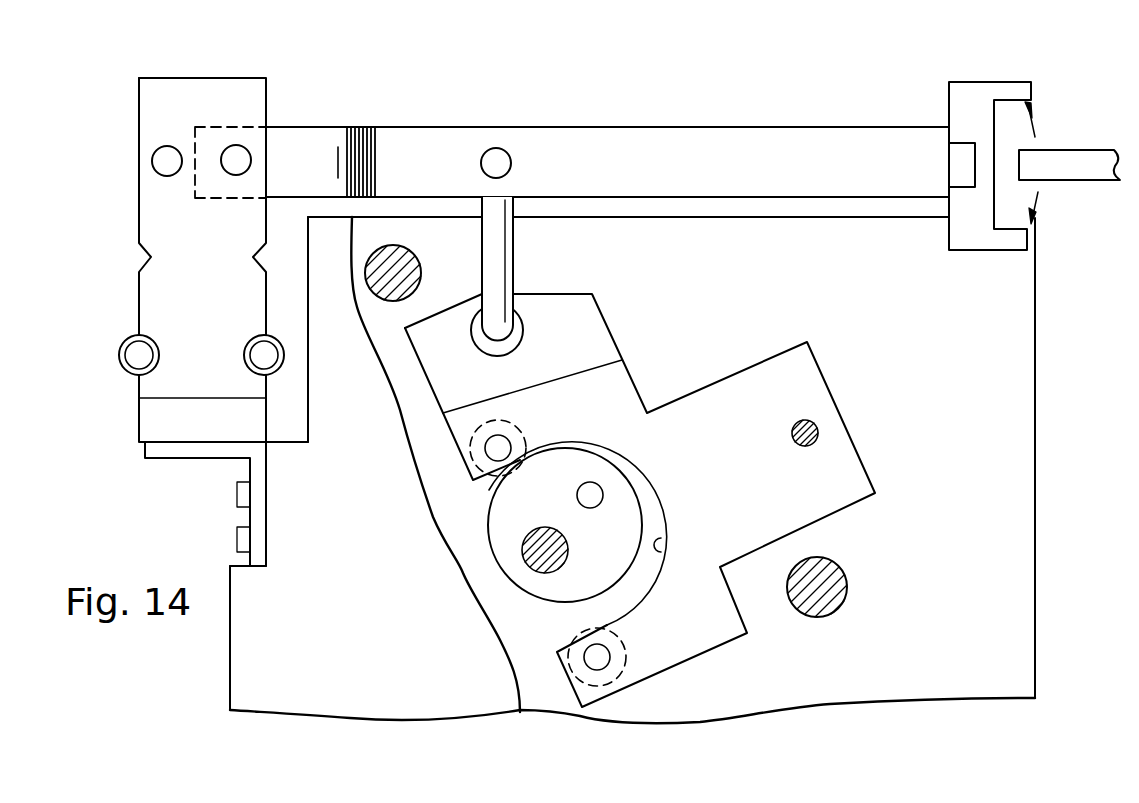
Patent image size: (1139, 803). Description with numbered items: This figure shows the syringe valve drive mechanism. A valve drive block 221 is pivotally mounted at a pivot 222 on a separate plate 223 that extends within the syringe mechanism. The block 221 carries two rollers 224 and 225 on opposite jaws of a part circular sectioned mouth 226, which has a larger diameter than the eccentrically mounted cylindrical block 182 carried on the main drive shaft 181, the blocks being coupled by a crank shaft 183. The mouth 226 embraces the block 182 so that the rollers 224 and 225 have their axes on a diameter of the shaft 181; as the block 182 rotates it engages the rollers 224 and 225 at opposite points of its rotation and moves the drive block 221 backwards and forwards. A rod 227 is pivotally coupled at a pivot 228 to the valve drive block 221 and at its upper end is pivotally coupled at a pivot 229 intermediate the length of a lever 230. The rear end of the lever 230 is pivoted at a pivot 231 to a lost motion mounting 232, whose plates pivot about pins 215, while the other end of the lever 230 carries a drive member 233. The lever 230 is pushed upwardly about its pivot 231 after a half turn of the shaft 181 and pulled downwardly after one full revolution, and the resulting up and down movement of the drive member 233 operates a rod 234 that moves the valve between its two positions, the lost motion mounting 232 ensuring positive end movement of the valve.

The main drive shaft 181 is at (532, 558).
The eccentrically mounted cylindrical block 182 is at (548, 583).
The crank shaft 183 is at (590, 495).
The pin 215 is at (162, 152).
The valve drive block 221 is at (610, 367).
The pivot 222 is at (818, 430).
The separate plate 223 is at (1008, 518).
The roller 224 is at (497, 478).
The roller 225 is at (578, 683).
The part circular sectioned mouth 226 is at (664, 548).
The rod 227 is at (500, 255).
The pivot 228 is at (508, 330).
The pivot 229 is at (495, 150).
The lever 230 is at (655, 144).
The pivot 231 is at (238, 155).
The lost motion mounting 232 is at (127, 186).
The drive member 233 is at (979, 90).
The rod 234 is at (1075, 158).